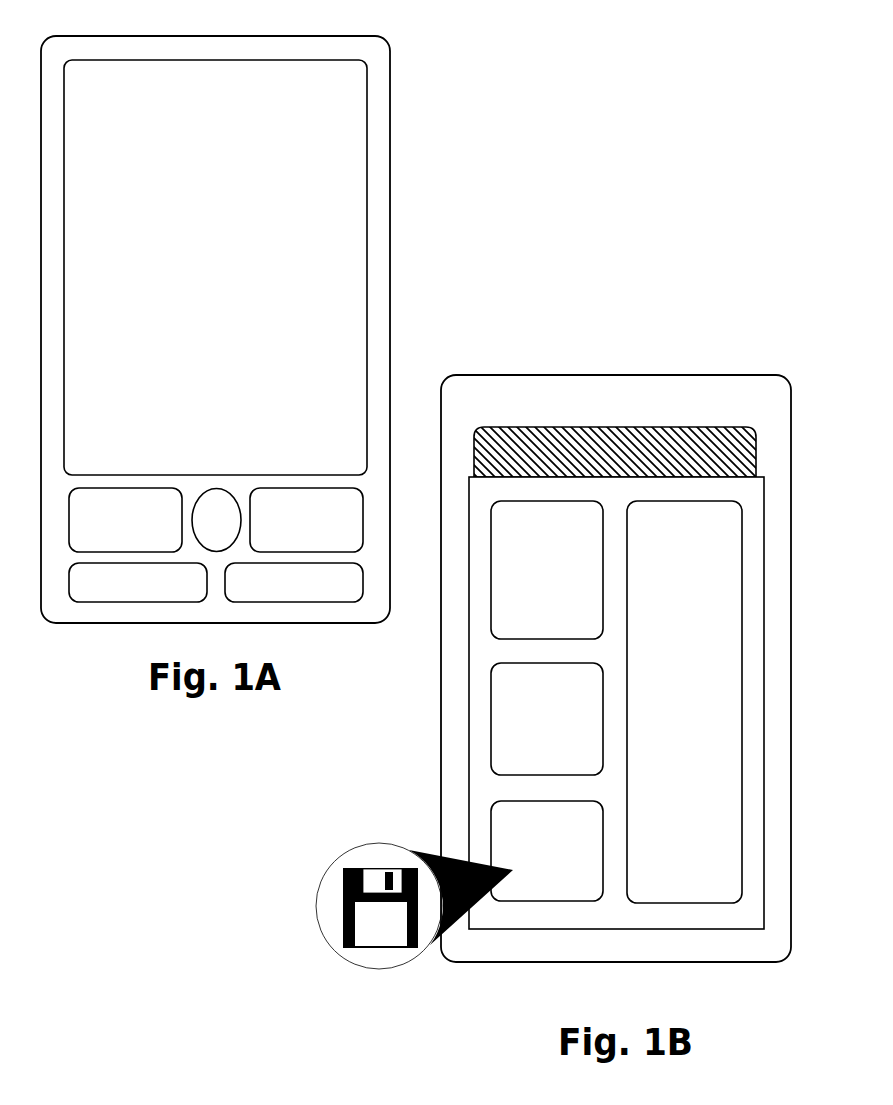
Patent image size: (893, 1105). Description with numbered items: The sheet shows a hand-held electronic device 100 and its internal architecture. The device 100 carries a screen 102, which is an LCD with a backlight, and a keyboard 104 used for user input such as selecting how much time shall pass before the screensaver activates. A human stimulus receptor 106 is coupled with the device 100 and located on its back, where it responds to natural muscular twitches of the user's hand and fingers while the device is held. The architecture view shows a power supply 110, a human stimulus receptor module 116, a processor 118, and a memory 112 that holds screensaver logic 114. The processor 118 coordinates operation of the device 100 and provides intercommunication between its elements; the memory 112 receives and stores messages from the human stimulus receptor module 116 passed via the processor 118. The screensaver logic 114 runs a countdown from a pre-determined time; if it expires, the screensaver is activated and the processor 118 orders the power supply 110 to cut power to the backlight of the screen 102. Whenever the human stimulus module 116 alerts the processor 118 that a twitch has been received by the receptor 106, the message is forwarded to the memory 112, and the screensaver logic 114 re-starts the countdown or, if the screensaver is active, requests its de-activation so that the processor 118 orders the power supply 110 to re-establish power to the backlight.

In FIG. 1A, the hand-held electronic device 100 is at (389, 95).
In FIG. 1B, the hand-held electronic device 100 is at (512, 373).
In FIG. 1A, the screen 102 is at (367, 237).
In FIG. 1A, the keyboard 104 is at (180, 603).
In FIG. 1B, the human stimulus receptor 106 is at (599, 428).
In FIG. 1B, the power supply 110 is at (682, 903).
In FIG. 1B, the memory 112 is at (565, 901).
In FIG. 1B, the screensaver logic 114 is at (343, 893).
In FIG. 1B, the human stimulus receptor module 116 is at (491, 593).
In FIG. 1B, the processor 118 is at (491, 700).